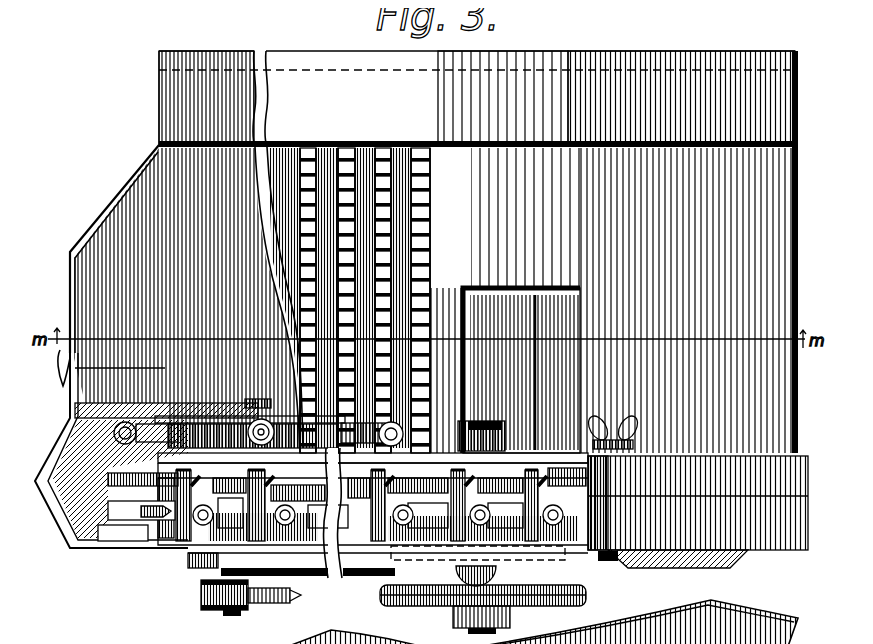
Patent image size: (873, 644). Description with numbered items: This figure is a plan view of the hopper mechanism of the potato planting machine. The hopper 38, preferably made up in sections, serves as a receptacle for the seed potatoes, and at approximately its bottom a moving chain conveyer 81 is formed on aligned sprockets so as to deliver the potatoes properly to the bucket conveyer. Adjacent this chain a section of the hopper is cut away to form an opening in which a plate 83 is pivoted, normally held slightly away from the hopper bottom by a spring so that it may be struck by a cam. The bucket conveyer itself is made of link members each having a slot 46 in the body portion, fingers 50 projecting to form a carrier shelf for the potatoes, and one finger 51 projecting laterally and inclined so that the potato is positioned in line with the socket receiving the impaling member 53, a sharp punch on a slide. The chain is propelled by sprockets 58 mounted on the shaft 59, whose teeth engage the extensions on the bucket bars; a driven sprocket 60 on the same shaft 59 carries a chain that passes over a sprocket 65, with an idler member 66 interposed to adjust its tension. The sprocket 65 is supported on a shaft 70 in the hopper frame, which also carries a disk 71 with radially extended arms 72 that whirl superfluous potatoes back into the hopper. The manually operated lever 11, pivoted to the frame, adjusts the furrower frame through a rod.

The hopper 38 is at (108, 210).
The moving chain conveyer 81 is at (318, 294).
The pivoted plate 83 is at (521, 370).
The radially extended arms 72 is at (112, 422).
The disk 71 is at (245, 418).
The manually operated lever 11 is at (270, 391).
The shaft 70 is at (120, 479).
The sprockets 58 is at (563, 465).
The laterally projecting inclined finger 51 is at (72, 507).
The fingers 50 is at (105, 503).
The impaling member 53 is at (152, 509).
The slot 46 is at (218, 510).
The idler member 66 is at (205, 585).
The sprocket 65 is at (274, 609).
The driven sprocket 60 is at (560, 596).
The shaft 59 is at (460, 624).